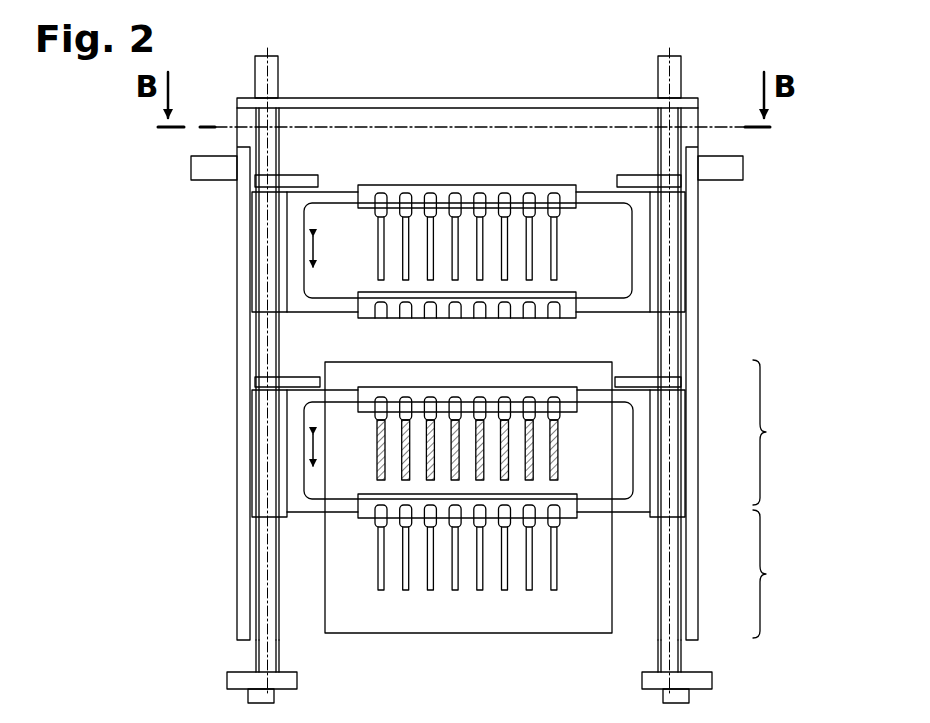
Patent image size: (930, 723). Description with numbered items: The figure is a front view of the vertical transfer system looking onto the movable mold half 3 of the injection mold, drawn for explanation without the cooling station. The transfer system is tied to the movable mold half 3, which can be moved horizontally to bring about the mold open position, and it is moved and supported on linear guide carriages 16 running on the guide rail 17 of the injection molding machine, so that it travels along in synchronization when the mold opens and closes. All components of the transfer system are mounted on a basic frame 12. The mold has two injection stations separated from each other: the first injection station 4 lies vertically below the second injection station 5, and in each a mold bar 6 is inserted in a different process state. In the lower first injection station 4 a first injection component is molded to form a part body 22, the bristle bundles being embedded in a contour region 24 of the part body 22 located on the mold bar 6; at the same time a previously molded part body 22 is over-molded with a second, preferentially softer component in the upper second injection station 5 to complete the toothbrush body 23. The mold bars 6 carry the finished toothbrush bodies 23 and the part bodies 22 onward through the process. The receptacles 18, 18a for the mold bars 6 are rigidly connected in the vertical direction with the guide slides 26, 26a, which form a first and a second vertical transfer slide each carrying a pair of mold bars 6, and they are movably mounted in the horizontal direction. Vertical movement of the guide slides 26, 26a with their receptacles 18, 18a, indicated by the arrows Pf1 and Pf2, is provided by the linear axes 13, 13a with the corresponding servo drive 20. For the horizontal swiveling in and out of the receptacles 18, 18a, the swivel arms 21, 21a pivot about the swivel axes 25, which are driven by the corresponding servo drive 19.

The movable mold half 3 is at (445, 625).
The first injection station 4 is at (771, 574).
The second injection station 5 is at (771, 432).
The mold bar 6 is at (395, 186).
The basic frame 12 is at (695, 116).
The linear axis 13 is at (240, 325).
The linear axis 13a is at (692, 330).
The linear guide carriage 16 is at (296, 680).
The guide rail 17 is at (272, 697).
The receptacle 18 is at (597, 193).
The receptacle 18a is at (313, 418).
The servo drive 19 is at (256, 59).
The servo drive 20 is at (191, 170).
The swivel arm 21 is at (290, 376).
The swivel arm 21a is at (300, 176).
The part body 22 is at (557, 255).
The toothbrush body 23 is at (559, 456).
The contour region 24 is at (430, 315).
The swivel axis 25 is at (262, 656).
The first vertical transfer slide 26 is at (252, 482).
The second vertical transfer slide 26a is at (283, 266).
The displacement direction arrow 1 Pf1 is at (316, 250).
The displacement direction arrow 2 Pf2 is at (316, 451).